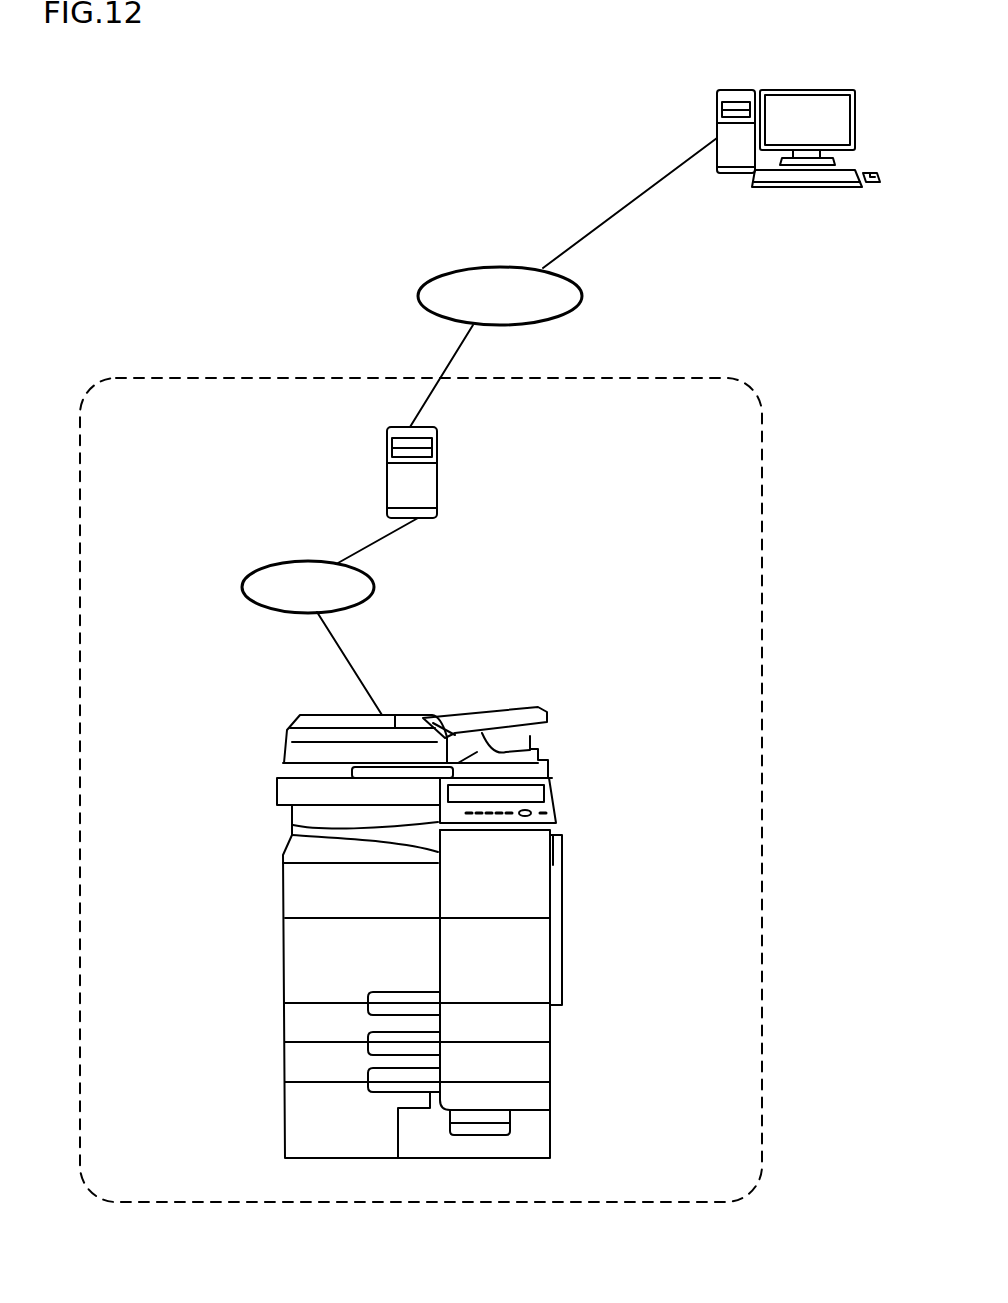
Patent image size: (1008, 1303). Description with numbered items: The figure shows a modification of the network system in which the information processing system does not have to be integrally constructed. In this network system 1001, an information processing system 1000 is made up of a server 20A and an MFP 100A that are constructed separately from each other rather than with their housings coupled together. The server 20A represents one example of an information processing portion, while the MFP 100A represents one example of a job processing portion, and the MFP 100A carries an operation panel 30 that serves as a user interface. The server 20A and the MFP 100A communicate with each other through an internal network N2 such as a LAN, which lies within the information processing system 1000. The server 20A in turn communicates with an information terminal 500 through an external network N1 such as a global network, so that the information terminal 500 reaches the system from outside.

The network system 1001 is at (232, 77).
The information terminal 500 is at (736, 88).
The external network N1 is at (583, 296).
The information processing system 1000 is at (764, 430).
The server 20A is at (437, 478).
The internal network N2 is at (375, 587).
The MFP 100A is at (283, 715).
The operation panel 30 is at (552, 792).